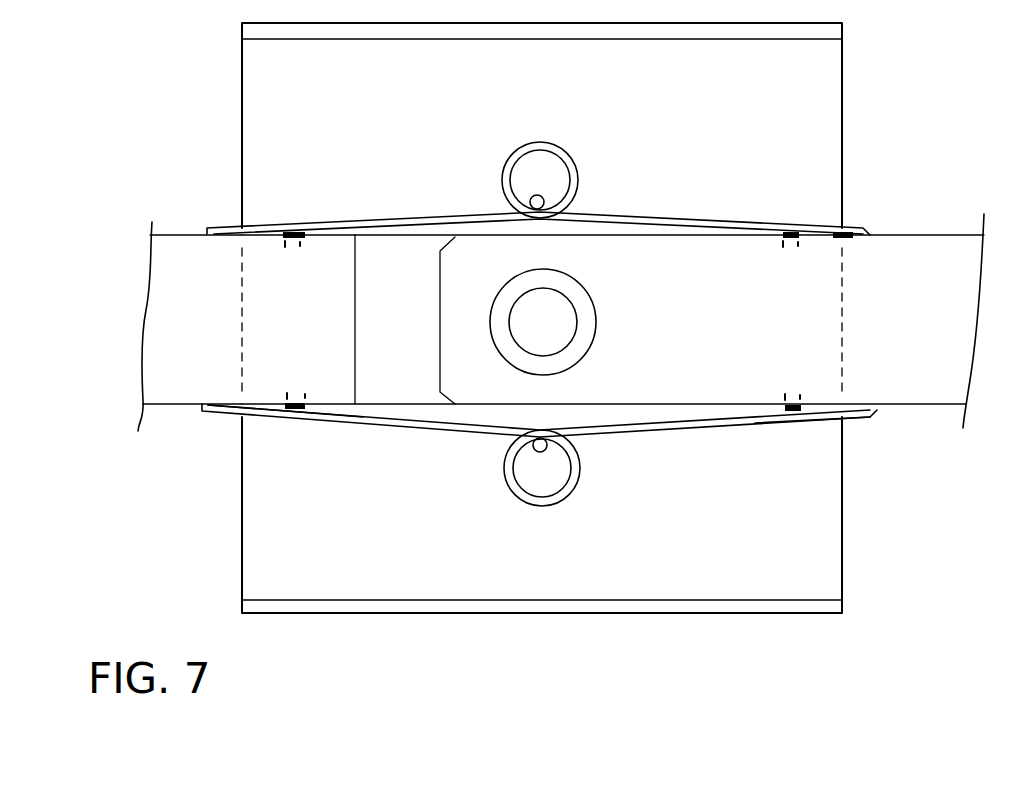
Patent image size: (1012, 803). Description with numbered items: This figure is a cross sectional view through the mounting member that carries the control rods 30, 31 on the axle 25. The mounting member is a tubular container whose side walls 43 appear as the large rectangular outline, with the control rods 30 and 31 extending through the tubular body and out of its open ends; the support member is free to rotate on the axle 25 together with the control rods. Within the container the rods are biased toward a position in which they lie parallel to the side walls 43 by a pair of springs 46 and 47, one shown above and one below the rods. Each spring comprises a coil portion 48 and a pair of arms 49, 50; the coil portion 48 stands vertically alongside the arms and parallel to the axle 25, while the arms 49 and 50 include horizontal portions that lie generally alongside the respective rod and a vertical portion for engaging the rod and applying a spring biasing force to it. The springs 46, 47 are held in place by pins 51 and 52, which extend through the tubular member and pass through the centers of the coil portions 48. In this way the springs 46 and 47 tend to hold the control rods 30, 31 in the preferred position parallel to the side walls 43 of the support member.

The axle 25 is at (551, 305).
The control rod 30 is at (189, 240).
The control rod 31 is at (939, 262).
The side walls 43 is at (350, 39).
The spring 46 is at (468, 212).
The spring 47 is at (637, 430).
The coil portion 48 is at (566, 497).
The spring arm 49 is at (363, 418).
The spring arm 50 is at (755, 423).
The pin 51 is at (532, 452).
The pin 52 is at (536, 198).